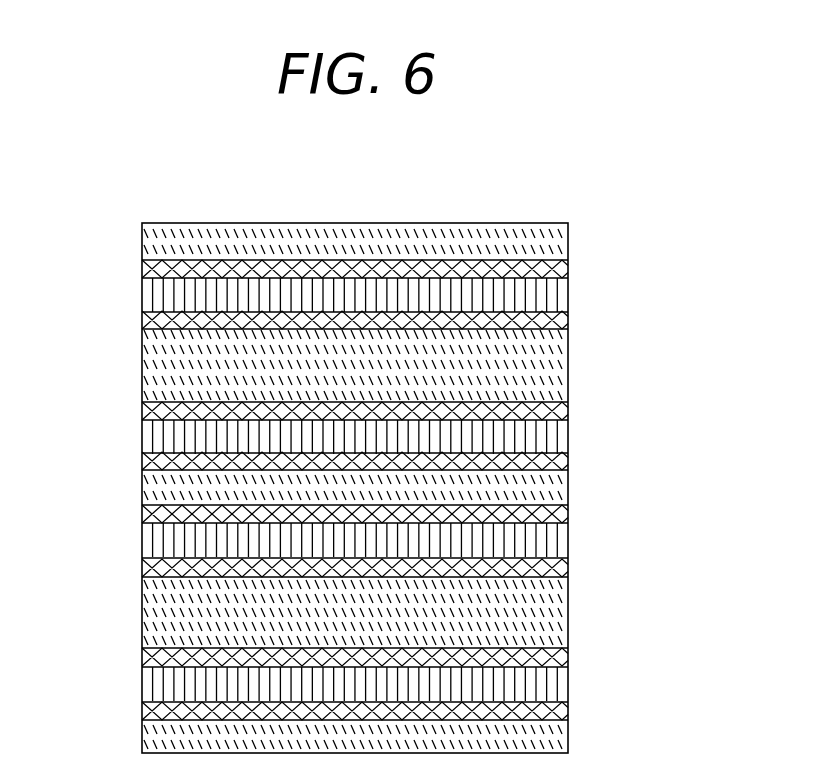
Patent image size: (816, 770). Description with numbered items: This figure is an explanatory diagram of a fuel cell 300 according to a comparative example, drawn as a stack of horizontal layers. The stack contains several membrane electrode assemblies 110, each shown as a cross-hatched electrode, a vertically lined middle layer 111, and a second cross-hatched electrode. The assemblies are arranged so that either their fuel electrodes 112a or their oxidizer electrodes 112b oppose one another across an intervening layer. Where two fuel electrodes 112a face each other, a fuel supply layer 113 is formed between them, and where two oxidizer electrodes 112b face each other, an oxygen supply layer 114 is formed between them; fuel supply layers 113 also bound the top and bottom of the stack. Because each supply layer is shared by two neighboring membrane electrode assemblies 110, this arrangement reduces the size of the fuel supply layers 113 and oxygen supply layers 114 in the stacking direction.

The fuel cell 300 is at (366, 193).
The membrane electrode assembly 110 is at (122, 252).
The electrolyte layer 111 is at (566, 297).
The fuel electrode 112a is at (570, 263).
The oxidizer electrode 112b is at (570, 322).
The fuel supply layer 113 is at (142, 238).
The oxygen supply layer 114 is at (142, 352).